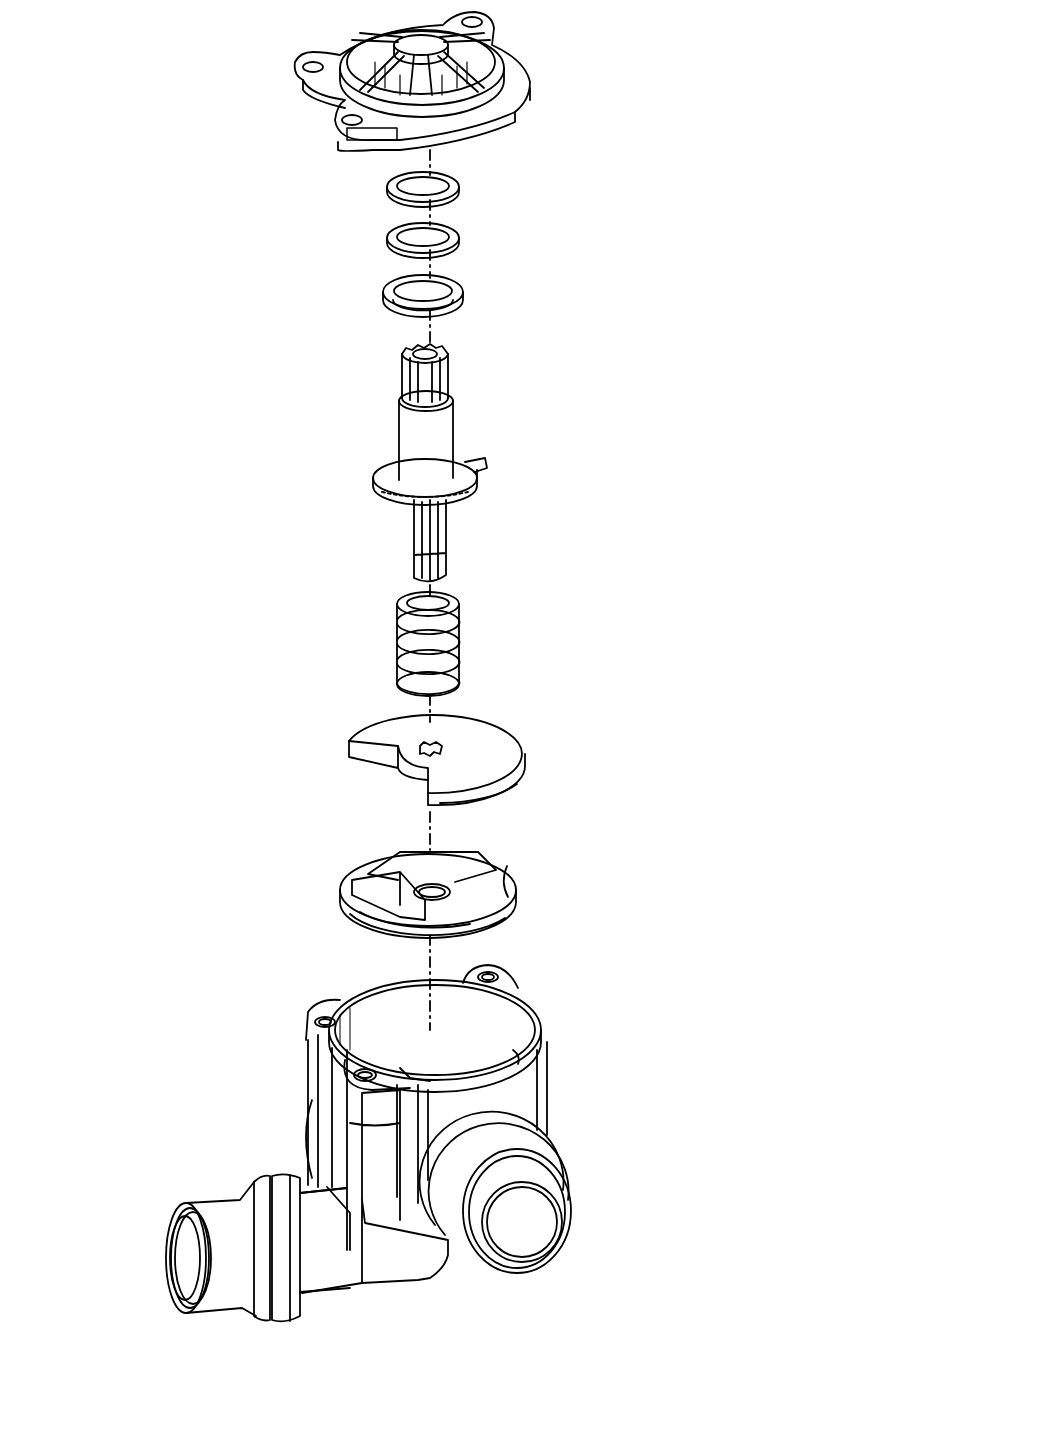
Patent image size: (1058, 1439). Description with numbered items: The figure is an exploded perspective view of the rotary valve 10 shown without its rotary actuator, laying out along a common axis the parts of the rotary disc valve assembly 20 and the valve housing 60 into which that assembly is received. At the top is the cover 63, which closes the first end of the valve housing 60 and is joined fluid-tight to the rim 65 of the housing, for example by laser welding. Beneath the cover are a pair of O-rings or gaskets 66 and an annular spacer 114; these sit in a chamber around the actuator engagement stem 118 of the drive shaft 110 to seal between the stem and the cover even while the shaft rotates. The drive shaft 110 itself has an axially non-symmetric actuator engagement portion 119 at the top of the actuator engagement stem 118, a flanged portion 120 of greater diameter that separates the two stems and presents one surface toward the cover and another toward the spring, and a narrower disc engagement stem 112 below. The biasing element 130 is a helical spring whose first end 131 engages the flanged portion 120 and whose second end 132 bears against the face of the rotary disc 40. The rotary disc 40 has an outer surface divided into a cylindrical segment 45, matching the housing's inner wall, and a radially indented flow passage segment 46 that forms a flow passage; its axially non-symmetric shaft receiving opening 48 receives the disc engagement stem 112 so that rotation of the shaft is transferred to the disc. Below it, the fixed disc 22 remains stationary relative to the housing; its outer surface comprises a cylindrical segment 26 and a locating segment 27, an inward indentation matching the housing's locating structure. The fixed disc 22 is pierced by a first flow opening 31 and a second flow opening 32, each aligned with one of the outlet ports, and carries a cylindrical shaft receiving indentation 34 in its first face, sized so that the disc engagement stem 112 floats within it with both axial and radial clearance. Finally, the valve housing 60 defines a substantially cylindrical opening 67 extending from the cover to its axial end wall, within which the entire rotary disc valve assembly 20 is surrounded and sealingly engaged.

The rotary valve 10 is at (670, 15).
The rotary disc valve assembly 20 is at (540, 350).
The fixed disc 22 is at (325, 893).
The cylindrical segment 26 is at (385, 938).
The locating segment 27 is at (512, 886).
The first flow opening 31 is at (378, 884).
The second flow opening 32 is at (405, 862).
The shaft receiving indentation 34 is at (448, 890).
The rotary disc 40 is at (328, 740).
The cylindrical segment 45 is at (503, 792).
The flow passage segment 46 is at (365, 754).
The shaft receiving opening 48 is at (446, 748).
The valve housing 60 is at (303, 1093).
The cover 63 is at (284, 69).
The rim 65 is at (520, 1010).
The gaskets 66 is at (378, 186).
The opening 67 is at (392, 1032).
The drive shaft 110 is at (360, 472).
The disc engagement stem 112 is at (445, 540).
The annular spacer 114 is at (378, 296).
The actuator engagement stem 118 is at (447, 438).
The actuator engagement portion 119 is at (408, 382).
The flanged portion 120 is at (378, 490).
The biasing element 130 is at (375, 628).
The first end 131 is at (458, 595).
The second end 132 is at (455, 688).